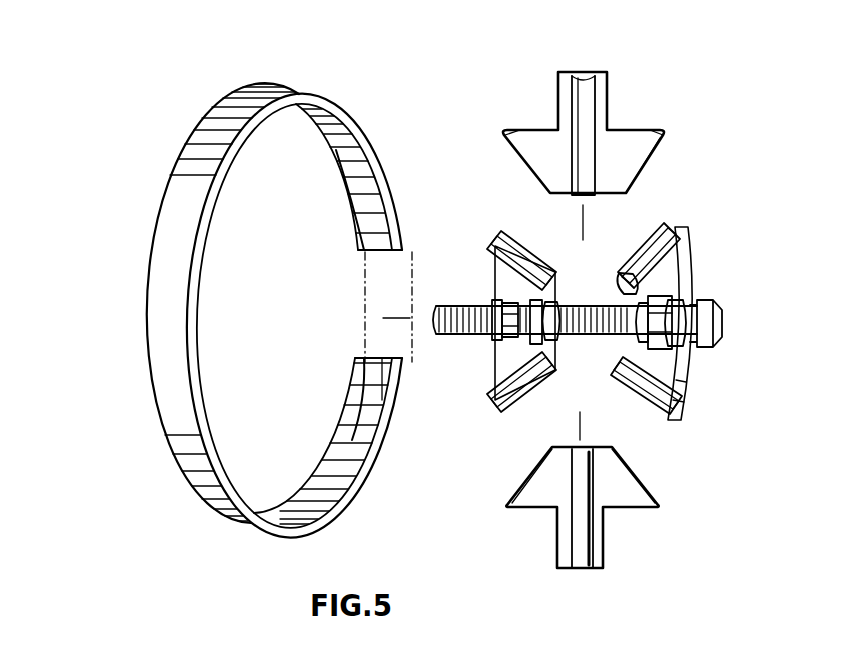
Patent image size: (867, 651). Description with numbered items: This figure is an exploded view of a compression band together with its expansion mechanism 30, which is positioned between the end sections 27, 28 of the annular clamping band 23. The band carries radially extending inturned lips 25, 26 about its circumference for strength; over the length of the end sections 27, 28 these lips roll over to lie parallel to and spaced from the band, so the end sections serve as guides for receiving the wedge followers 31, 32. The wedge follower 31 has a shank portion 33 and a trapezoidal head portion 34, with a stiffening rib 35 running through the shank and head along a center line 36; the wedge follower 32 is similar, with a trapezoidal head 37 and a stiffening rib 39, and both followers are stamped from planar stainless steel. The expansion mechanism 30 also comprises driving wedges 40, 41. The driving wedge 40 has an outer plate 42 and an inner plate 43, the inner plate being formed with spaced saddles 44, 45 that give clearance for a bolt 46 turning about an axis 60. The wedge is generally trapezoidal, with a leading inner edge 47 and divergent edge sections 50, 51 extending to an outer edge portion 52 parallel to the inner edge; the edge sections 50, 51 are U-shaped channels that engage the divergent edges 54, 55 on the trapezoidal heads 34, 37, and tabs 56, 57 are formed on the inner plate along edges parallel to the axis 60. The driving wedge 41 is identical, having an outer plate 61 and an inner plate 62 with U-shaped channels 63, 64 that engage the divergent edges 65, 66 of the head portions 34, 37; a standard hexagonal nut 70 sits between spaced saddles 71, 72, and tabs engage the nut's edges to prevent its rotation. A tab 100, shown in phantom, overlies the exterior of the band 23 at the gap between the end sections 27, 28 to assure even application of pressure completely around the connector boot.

The band 23 is at (158, 305).
The inturned lip 25 is at (306, 138).
The inturned lip 26 is at (348, 122).
The end section 27 is at (350, 206).
The end section 28 is at (362, 380).
The tab 100 is at (365, 272).
The axis 60 is at (412, 299).
The expansion mechanism 30 is at (700, 446).
The wedge follower 31 is at (620, 89).
The wedge follower 32 is at (617, 532).
The shank portion 33 is at (608, 106).
The trapezoidal head portion 34 is at (632, 163).
The stiffening rib 35 is at (586, 74).
The center line 36 is at (588, 222).
The trapezoidal head 37 is at (636, 503).
The stiffening rib 39 is at (573, 530).
The driving wedge 40 is at (712, 275).
The driving wedge 41 is at (472, 252).
The outer plate 42 is at (688, 383).
The inner plate 43 is at (686, 403).
The saddle 44 is at (624, 280).
The saddle 45 is at (702, 347).
The bolt 46 is at (600, 336).
The leading inner edge 47 is at (612, 362).
The divergent edge section 50 is at (650, 402).
The divergent edge section 51 is at (681, 234).
The outer edge portion 52 is at (690, 250).
The divergent edge 54 is at (662, 150).
The divergent edge 55 is at (646, 481).
The tab 56 is at (693, 297).
The tab 57 is at (690, 364).
The outer plate 61 is at (520, 233).
The inner plate 62 is at (498, 384).
The U-shaped channel 63 is at (494, 232).
The U-shaped channel 64 is at (498, 410).
The divergent edge 65 is at (506, 150).
The divergent edge 66 is at (530, 470).
The hexagonal nut 70 is at (495, 339).
The saddle 71 is at (490, 303).
The saddle 72 is at (500, 365).